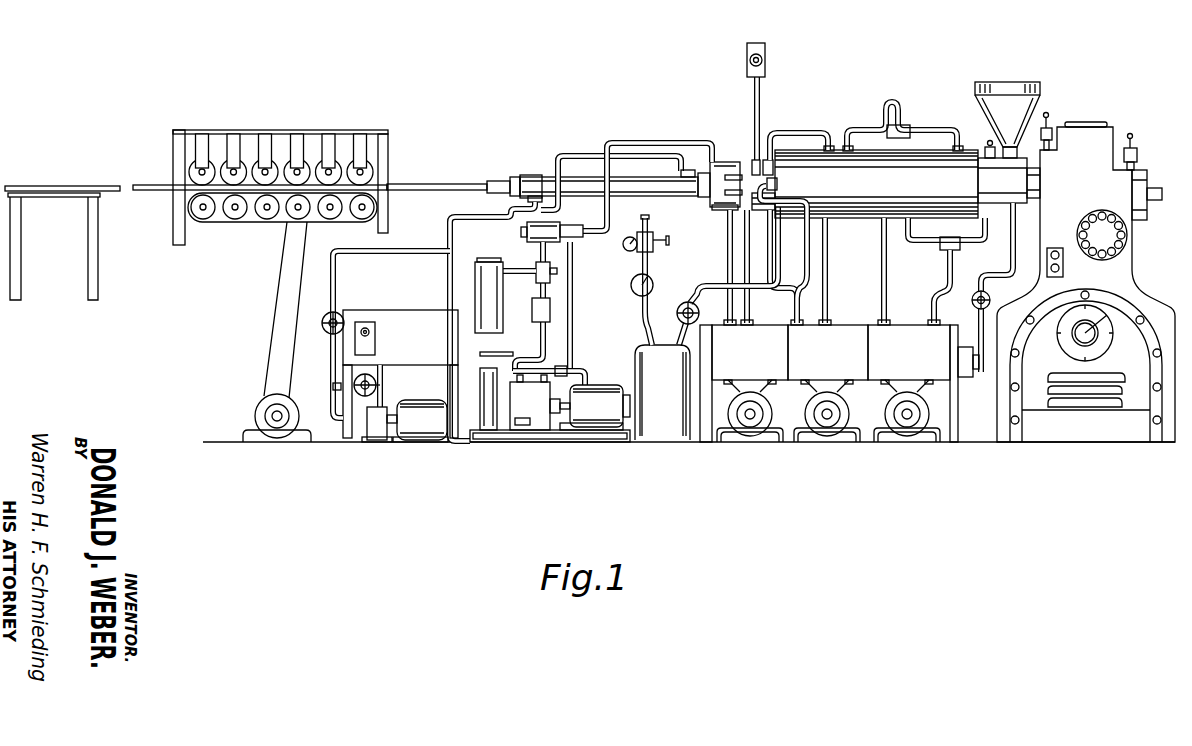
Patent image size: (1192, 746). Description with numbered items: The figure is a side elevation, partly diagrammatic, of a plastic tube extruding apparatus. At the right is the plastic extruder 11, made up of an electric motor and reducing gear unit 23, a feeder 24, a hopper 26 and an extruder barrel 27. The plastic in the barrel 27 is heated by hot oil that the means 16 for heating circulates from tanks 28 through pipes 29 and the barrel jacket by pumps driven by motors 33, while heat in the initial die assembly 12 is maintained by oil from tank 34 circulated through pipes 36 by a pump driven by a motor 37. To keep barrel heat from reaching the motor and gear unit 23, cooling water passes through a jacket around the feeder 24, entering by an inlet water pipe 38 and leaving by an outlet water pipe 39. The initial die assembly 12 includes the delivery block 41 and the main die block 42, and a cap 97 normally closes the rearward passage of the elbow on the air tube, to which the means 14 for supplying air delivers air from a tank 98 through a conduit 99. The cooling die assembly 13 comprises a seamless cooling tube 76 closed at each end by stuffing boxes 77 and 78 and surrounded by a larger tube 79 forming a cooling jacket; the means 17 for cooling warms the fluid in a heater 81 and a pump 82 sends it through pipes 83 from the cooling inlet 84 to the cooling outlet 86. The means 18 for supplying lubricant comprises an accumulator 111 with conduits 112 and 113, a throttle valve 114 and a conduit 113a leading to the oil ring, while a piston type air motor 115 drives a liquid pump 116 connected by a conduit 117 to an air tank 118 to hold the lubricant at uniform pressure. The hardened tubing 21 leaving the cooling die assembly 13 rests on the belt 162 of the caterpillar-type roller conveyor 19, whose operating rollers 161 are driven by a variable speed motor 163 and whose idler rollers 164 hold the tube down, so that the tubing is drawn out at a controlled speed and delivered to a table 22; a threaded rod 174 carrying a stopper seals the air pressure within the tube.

The plastic extruder 11 is at (920, 175).
The initial die assembly 12 is at (725, 162).
The cooling die assembly 13 is at (590, 177).
The means for supplying air under pressure 14 is at (652, 347).
The means for heating the plastic 16 is at (831, 387).
The means for cooling the cooling die assembly 17 is at (417, 436).
The means for supplying lubricant under pressure 18 is at (552, 420).
The caterpillar-type roller conveyor 19 is at (252, 233).
The tubing 21 is at (462, 183).
The table 22 is at (93, 263).
The electric motor and reducing gear unit 23 is at (1130, 282).
The feeder 24 is at (1040, 168).
The hopper 26 is at (1000, 84).
The extruder barrel 27 is at (838, 150).
The tanks 28 is at (850, 330).
The pipes 29 is at (793, 130).
The motors 33 is at (830, 422).
The tank 34 is at (768, 330).
The pipes 36 is at (745, 258).
The motor 37 is at (752, 422).
The inlet water pipe 38 is at (990, 298).
The outlet water pipe 39 is at (989, 146).
The delivery block 41 is at (760, 212).
The main die block 42 is at (722, 209).
The cooling tube 76 is at (498, 180).
The stuffing box 77 is at (517, 177).
The stuffing box 78 is at (700, 195).
The larger tube 79 is at (540, 176).
The heater 81 is at (390, 302).
The pump 82 is at (372, 425).
The pipes 83 is at (425, 246).
The cooling inlet 84 is at (525, 200).
The cooling outlet 86 is at (680, 173).
The cap 97 is at (778, 184).
The tank 98 is at (640, 350).
The conduit 99 is at (697, 288).
The accumulator 111 is at (482, 412).
The conduit 112 is at (563, 369).
The conduit 113 is at (572, 276).
The conduit 113a is at (697, 133).
The throttle valve 114 is at (540, 242).
The piston type air motor 115 is at (537, 420).
The liquid pump 116 is at (618, 400).
The conduit 117 is at (538, 285).
The air tank 118 is at (477, 276).
The operating rollers 161 is at (233, 214).
The belt 162 is at (272, 221).
The variable speed motor 163 is at (255, 408).
The idler rollers 164 is at (368, 165).
The threaded rod 174 is at (33, 188).